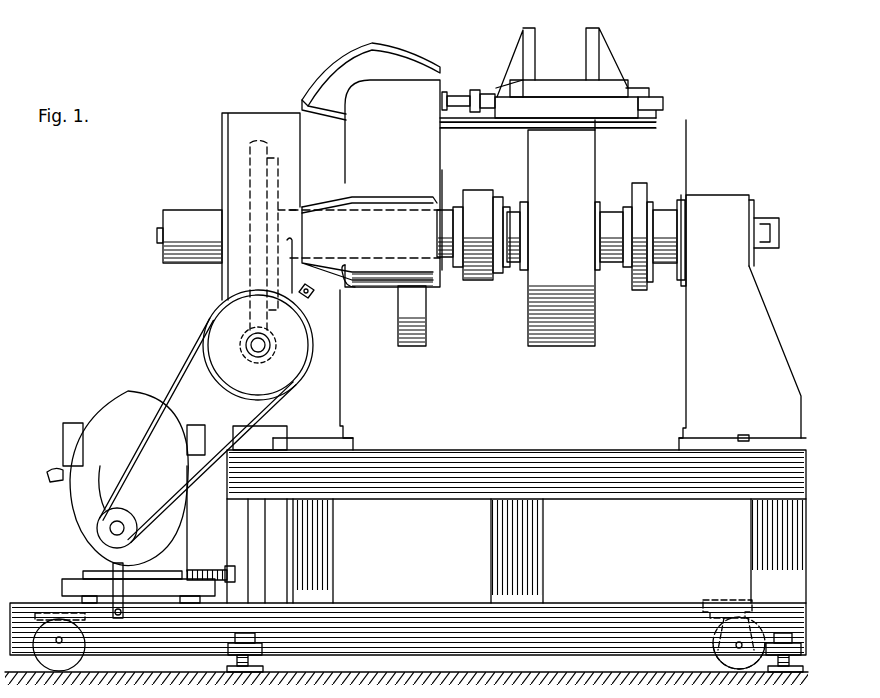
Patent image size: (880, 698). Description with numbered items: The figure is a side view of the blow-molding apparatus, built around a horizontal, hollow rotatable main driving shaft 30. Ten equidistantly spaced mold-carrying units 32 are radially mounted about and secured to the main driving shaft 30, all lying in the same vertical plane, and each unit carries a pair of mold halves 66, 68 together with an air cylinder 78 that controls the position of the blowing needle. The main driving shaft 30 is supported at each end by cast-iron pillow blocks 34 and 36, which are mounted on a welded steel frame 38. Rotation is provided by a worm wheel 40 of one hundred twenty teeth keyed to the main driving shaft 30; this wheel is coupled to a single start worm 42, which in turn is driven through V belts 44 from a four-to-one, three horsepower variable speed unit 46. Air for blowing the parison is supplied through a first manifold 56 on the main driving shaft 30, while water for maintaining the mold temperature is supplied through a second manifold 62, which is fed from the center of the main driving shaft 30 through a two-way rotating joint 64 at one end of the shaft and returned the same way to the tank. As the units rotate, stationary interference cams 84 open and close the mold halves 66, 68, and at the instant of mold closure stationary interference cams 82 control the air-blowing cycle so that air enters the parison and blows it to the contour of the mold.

The main driving shaft 30 is at (612, 207).
The mold-carrying unit 32 is at (566, 37).
The pillow block 34 is at (735, 193).
The pillow block 36 is at (274, 106).
The frame 38 is at (751, 493).
The worm wheel 40 is at (222, 316).
The single start worm 42 is at (184, 353).
The V belts 44 is at (185, 379).
The variable speed unit 46 is at (98, 416).
The first manifold 56 is at (640, 190).
The second manifold 62 is at (467, 270).
The two-way rotating joint 64 is at (160, 244).
The mold half 66 is at (608, 58).
The mold half 68 is at (518, 50).
The air cylinder 78 is at (475, 94).
The stationary interference cams 82 is at (672, 195).
The stationary interference cams 84 is at (433, 63).